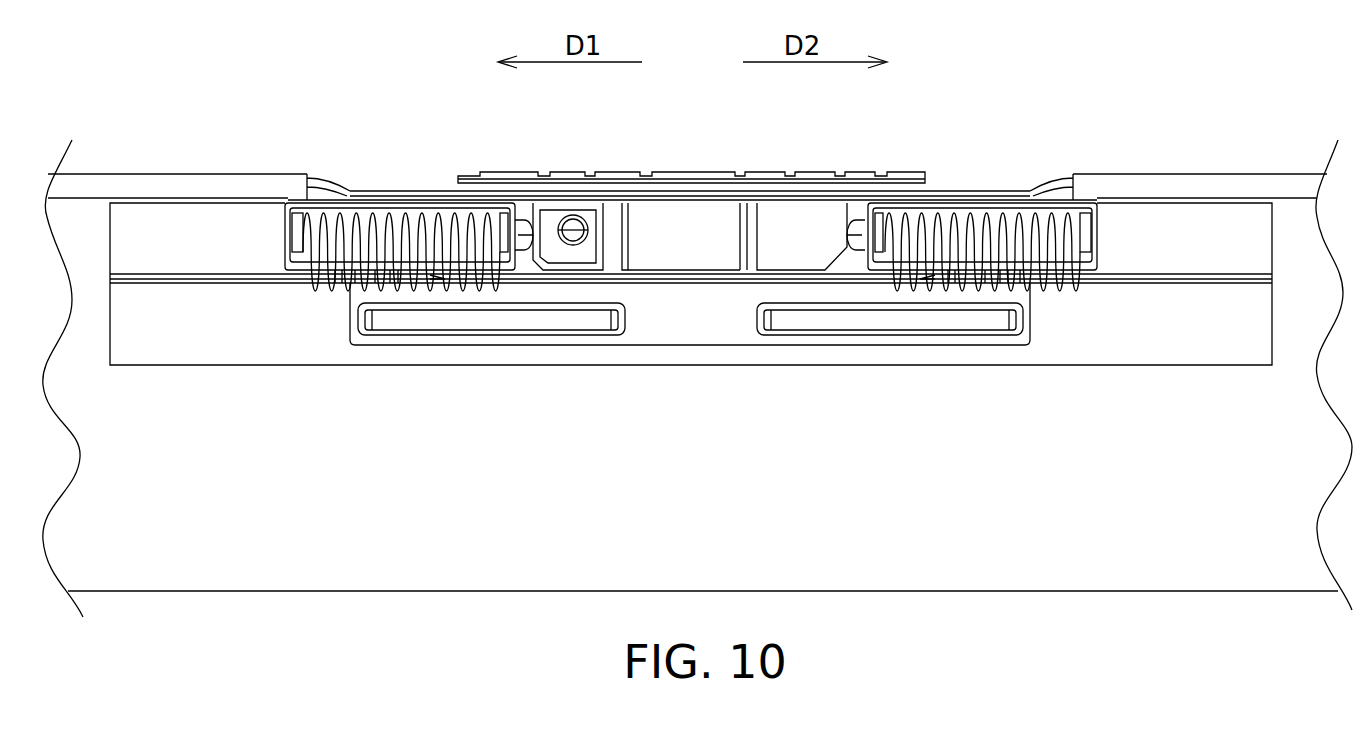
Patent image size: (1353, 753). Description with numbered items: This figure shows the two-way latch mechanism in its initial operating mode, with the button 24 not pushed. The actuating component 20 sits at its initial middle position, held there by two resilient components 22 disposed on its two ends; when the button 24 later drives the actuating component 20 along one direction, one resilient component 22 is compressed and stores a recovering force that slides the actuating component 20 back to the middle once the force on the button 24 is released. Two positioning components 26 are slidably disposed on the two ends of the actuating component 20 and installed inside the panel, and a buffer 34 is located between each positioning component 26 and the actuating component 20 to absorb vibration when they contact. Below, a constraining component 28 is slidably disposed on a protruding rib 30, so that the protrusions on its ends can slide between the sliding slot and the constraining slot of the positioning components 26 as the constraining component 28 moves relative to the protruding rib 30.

The actuating component 20 is at (796, 236).
The resilient component 22 is at (393, 215).
The button 24 is at (688, 181).
The positioning component 26 is at (293, 215).
The constraining component 28 is at (690, 320).
The protruding rib 30 is at (495, 318).
The buffer 34 is at (518, 220).